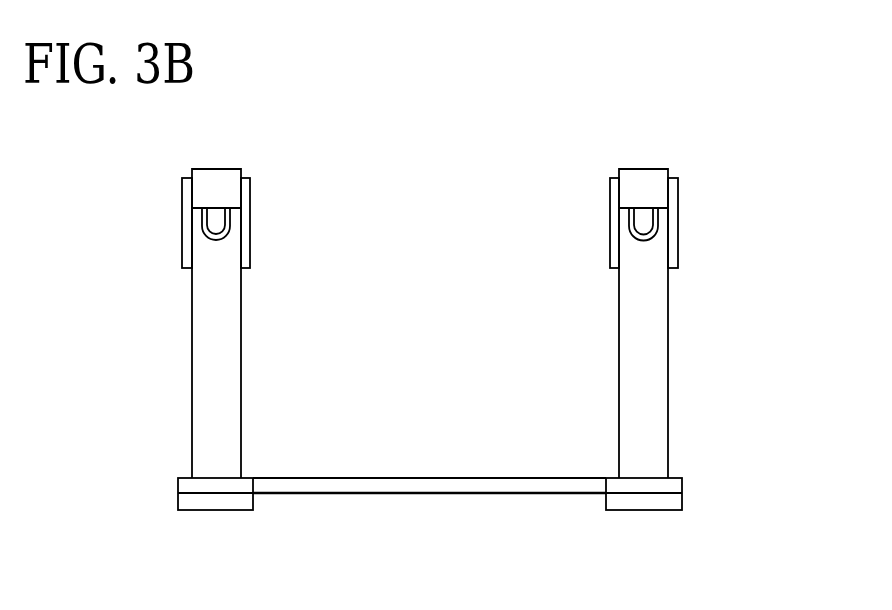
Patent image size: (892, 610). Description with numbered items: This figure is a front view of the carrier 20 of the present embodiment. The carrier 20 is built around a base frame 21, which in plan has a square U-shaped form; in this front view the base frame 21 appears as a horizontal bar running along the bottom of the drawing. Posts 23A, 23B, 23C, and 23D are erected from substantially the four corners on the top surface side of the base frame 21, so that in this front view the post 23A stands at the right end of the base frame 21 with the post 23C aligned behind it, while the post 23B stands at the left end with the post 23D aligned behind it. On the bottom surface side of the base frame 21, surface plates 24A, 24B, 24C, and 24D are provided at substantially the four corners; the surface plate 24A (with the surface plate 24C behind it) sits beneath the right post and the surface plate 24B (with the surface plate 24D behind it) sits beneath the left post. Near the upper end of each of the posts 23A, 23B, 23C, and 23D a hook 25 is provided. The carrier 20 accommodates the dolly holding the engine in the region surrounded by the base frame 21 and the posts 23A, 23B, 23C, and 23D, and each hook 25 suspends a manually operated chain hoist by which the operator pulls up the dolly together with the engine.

The carrier 20 is at (393, 505).
The base frame 21 is at (453, 493).
The post 23A is at (706, 323).
The post 23B is at (155, 323).
The post 23C is at (668, 365).
The post 23D is at (192, 363).
The surface plate 24A is at (660, 527).
The surface plate 24B is at (233, 527).
The surface plate 24C is at (643, 510).
The surface plate 24D is at (215, 510).
The hook 25 is at (202, 229).